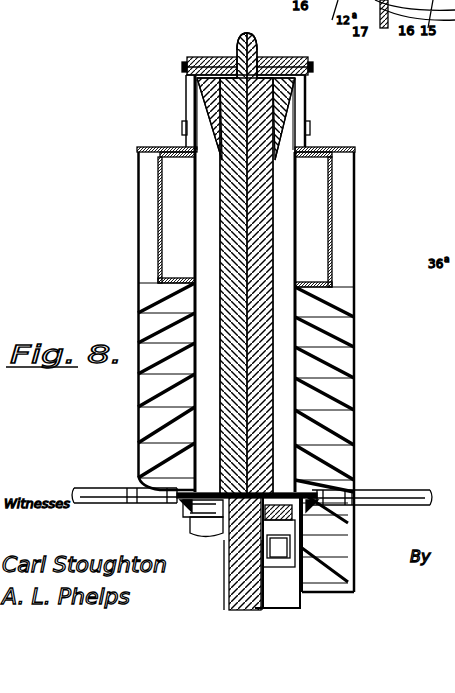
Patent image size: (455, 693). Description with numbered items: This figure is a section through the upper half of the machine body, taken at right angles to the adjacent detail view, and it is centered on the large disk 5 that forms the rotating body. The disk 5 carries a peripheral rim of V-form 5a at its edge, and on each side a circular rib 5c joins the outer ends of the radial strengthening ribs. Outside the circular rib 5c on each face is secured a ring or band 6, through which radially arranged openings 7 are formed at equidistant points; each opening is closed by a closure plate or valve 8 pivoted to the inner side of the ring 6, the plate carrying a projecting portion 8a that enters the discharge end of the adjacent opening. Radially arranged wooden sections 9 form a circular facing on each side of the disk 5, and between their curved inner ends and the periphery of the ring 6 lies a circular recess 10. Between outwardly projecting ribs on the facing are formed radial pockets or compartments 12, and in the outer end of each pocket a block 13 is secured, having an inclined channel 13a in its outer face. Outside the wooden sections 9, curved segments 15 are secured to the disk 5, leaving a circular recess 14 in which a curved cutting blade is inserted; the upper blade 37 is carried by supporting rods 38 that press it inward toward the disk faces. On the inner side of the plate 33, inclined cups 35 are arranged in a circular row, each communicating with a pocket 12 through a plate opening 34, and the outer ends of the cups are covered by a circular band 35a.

The disk 5 is at (273, 426).
The peripheral rim of V-form 5a is at (257, 46).
The circular rib 5c is at (231, 530).
The ring or band 6 is at (190, 515).
The radially arranged openings 7 is at (208, 525).
The closure plates or valves 8 is at (282, 550).
The projecting portion 8a is at (300, 545).
The wooden sections 9 is at (208, 102).
The circular recess 10 is at (203, 492).
The radial pockets or compartments 12 is at (160, 250).
The block 13 is at (186, 96).
The inclined channel 13a is at (352, 135).
The circular recess 14 is at (206, 82).
The curved segments 15 is at (193, 57).
The plate 33 is at (189, 83).
The plate openings 34 is at (186, 121).
The inclined cups 35 is at (150, 223).
The circular band 35a is at (370, 362).
The upper cutting blade 37 is at (183, 506).
The supporting rods 38 is at (93, 492).